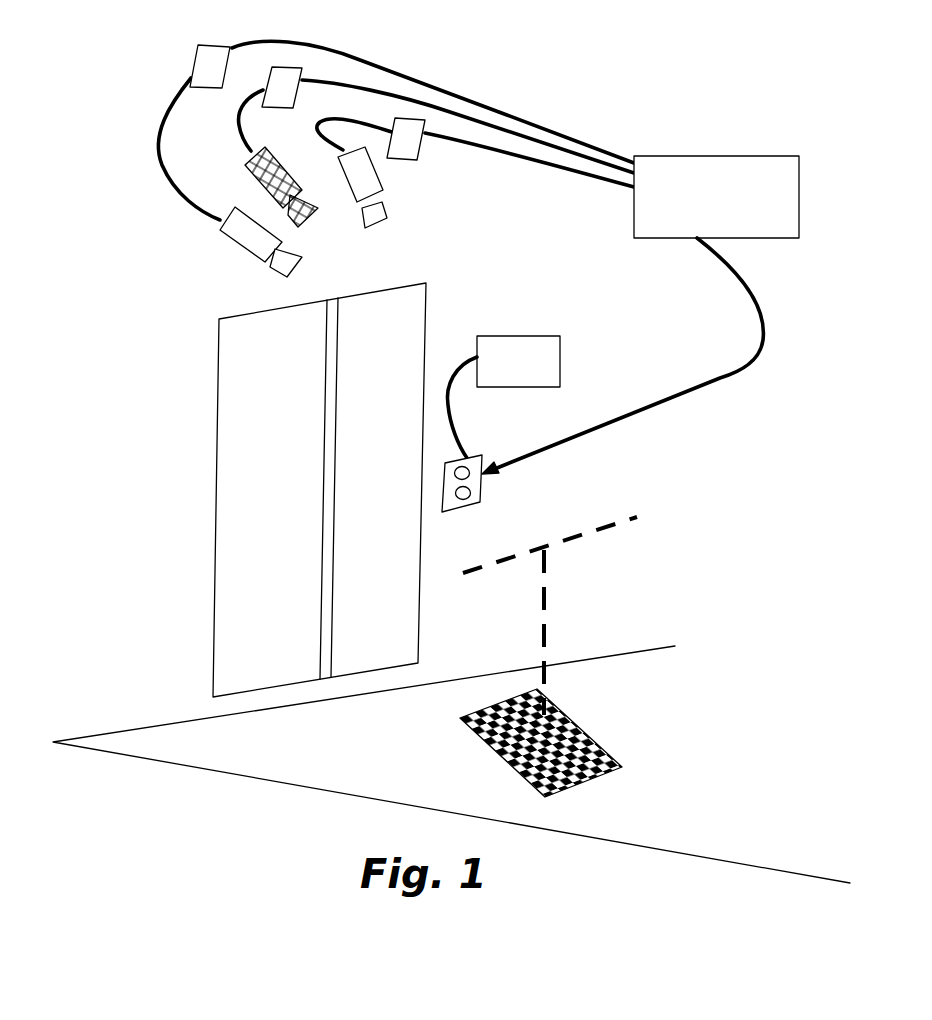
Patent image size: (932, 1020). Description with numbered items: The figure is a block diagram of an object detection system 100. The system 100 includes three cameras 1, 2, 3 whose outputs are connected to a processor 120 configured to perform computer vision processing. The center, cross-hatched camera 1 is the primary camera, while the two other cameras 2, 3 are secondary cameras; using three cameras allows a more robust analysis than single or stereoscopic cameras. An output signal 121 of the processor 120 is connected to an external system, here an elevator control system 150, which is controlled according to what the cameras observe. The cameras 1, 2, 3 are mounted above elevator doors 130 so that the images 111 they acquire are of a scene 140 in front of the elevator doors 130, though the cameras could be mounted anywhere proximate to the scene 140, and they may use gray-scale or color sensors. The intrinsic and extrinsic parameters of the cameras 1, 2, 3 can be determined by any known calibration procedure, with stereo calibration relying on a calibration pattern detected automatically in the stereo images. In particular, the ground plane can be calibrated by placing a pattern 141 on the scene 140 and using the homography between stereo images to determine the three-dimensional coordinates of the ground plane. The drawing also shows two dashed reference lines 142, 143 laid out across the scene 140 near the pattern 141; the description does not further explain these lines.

The object detection system 100 is at (780, 568).
The primary camera 1 is at (313, 220).
The secondary camera 2 is at (283, 275).
The secondary camera 3 is at (390, 207).
The images 111 is at (190, 57).
The processor 120 is at (799, 193).
The output signal 121 is at (722, 376).
The elevator doors 130 is at (221, 380).
The scene 140 is at (418, 753).
The pattern 141 is at (618, 762).
The first reference line 142 is at (620, 527).
The second reference line 143 is at (548, 632).
The elevator control system 150 is at (562, 365).